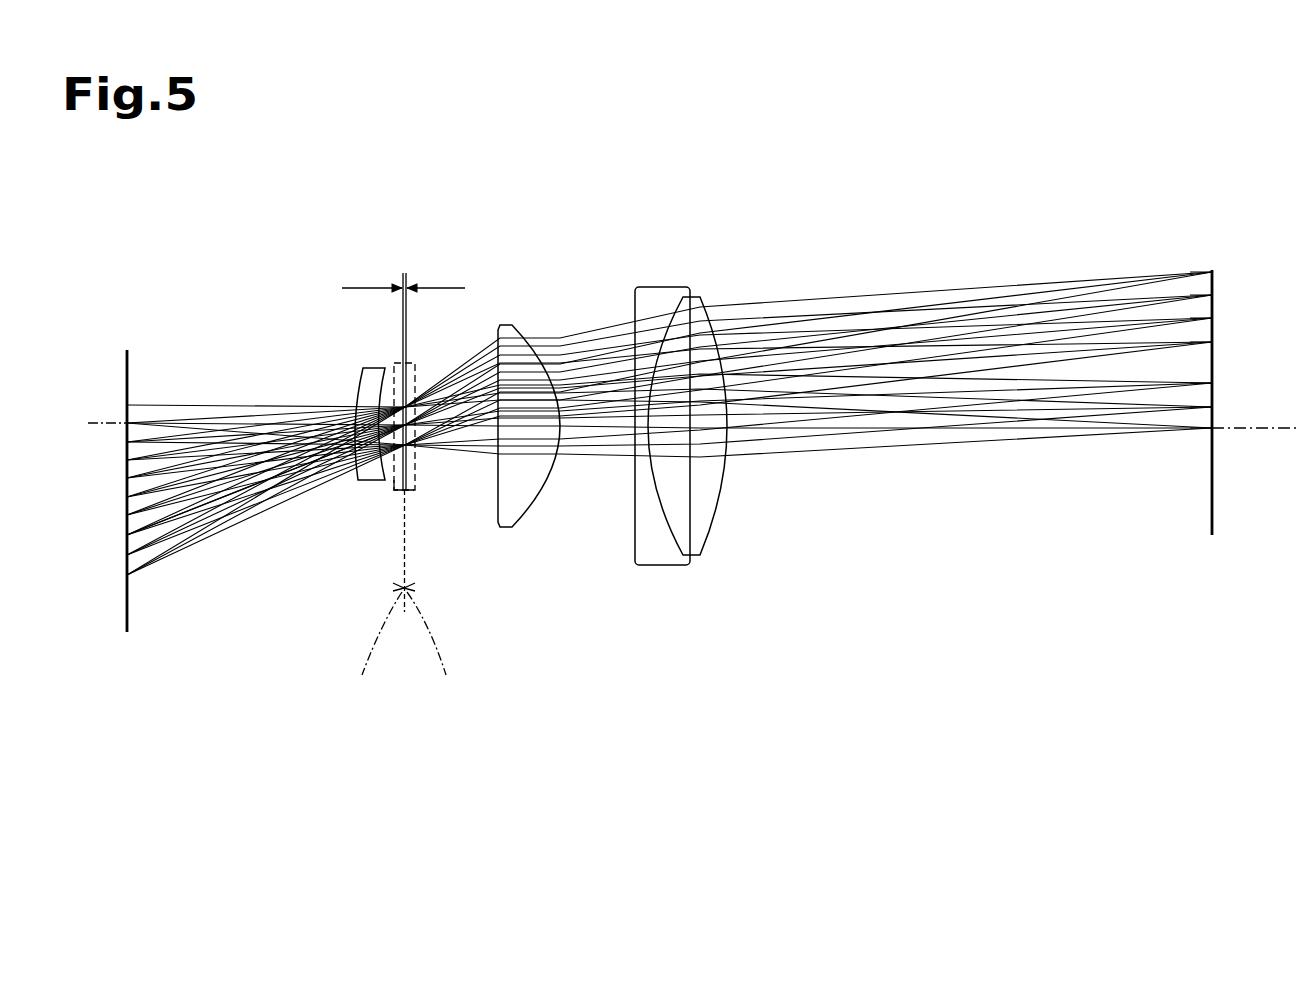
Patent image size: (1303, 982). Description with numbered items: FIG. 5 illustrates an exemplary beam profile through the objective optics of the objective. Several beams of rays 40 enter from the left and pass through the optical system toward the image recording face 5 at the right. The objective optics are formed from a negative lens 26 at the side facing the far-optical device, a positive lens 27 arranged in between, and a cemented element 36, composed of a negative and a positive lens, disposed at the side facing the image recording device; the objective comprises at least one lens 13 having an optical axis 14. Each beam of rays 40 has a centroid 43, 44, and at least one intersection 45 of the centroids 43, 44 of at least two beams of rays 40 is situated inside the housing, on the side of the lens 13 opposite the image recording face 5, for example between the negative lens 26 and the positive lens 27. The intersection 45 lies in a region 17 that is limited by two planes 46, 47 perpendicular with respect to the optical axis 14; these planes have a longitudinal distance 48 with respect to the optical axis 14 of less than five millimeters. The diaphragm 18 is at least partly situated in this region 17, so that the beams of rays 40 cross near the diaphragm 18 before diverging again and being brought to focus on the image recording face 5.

The image recording face 5 is at (1214, 472).
The lens 13 is at (681, 420).
The optical axis 14 is at (1260, 425).
The region 17 is at (394, 482).
The diaphragm 18 is at (415, 482).
The negative lens 26 is at (367, 388).
The positive lens 27 is at (528, 508).
The cemented element 36 is at (672, 275).
The beams of rays 40 is at (1203, 333).
The centroid 43 is at (237, 432).
The centroid 44 is at (248, 500).
The intersection 45 is at (400, 395).
The plane 46 is at (368, 649).
The plane 47 is at (438, 649).
The longitudinal distance 48 is at (370, 282).